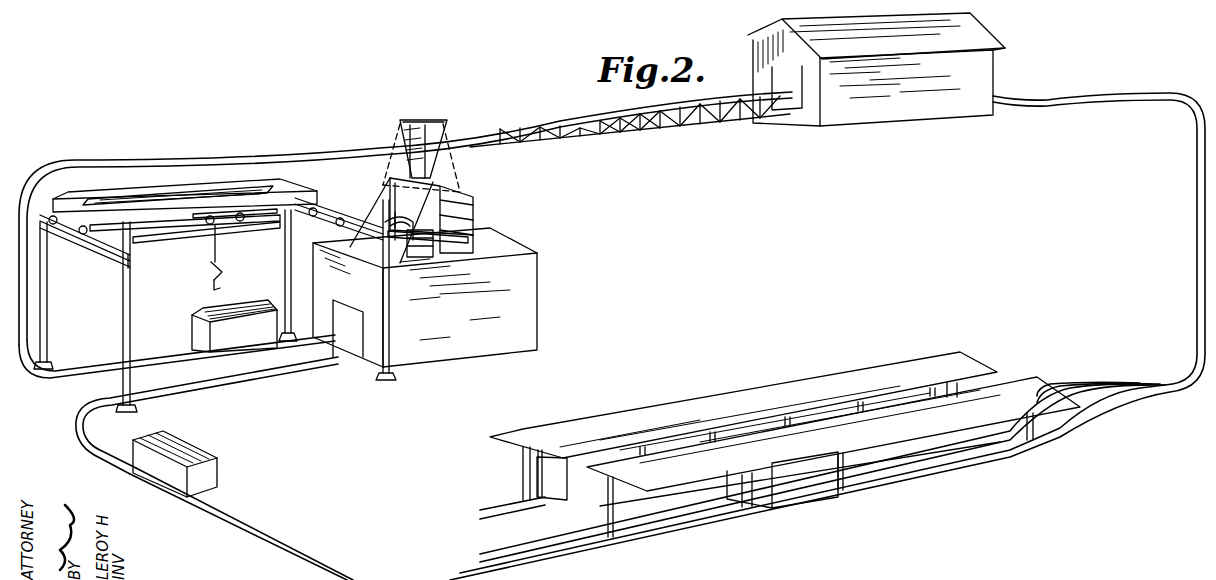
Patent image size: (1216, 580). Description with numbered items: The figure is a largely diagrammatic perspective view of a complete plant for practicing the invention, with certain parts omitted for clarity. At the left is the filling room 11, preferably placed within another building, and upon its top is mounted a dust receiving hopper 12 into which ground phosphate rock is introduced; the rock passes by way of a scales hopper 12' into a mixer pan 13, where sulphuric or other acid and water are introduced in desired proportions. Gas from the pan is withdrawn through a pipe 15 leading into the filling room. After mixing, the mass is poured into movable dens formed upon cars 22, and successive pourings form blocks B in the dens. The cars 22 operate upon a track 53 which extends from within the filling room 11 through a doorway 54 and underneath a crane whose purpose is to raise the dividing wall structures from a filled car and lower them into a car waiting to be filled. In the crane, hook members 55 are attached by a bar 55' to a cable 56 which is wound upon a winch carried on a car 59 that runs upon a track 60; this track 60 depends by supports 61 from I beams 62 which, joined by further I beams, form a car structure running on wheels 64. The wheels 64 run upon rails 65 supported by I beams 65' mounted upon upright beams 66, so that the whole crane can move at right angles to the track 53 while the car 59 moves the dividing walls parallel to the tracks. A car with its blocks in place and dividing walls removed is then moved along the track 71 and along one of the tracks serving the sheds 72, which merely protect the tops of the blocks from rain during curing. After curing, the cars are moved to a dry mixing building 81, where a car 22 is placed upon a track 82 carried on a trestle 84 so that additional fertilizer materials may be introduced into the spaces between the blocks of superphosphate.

The filling room 11 is at (540, 262).
The dust receiving hopper 12 is at (438, 149).
The scales hopper 12' is at (446, 158).
The mixer pan 13 is at (478, 236).
The pipe 15 is at (390, 218).
The car 22 is at (185, 341).
The track 53 is at (222, 383).
The doorway 54 is at (358, 345).
The hook members 55 is at (238, 285).
The bar 55' is at (235, 266).
The cable 56 is at (216, 245).
The car 59 is at (232, 211).
The track 60 is at (163, 238).
The supports 61 is at (128, 243).
The I beams 62 is at (172, 190).
The wheels 64 is at (82, 236).
The rails 65 is at (339, 206).
The I beams 65' is at (85, 249).
The upright beams 66 is at (122, 305).
The track 71 is at (232, 520).
The sheds 72 is at (655, 462).
The dry mixing building 81 is at (880, 22).
The track 82 is at (742, 95).
The trestle 84 is at (754, 120).
The blocks B is at (205, 470).